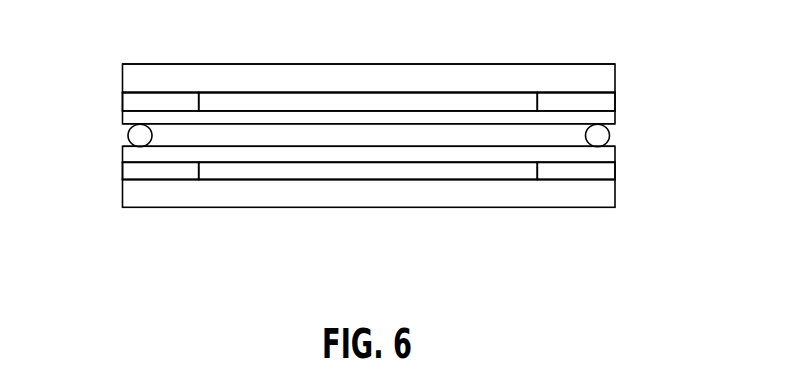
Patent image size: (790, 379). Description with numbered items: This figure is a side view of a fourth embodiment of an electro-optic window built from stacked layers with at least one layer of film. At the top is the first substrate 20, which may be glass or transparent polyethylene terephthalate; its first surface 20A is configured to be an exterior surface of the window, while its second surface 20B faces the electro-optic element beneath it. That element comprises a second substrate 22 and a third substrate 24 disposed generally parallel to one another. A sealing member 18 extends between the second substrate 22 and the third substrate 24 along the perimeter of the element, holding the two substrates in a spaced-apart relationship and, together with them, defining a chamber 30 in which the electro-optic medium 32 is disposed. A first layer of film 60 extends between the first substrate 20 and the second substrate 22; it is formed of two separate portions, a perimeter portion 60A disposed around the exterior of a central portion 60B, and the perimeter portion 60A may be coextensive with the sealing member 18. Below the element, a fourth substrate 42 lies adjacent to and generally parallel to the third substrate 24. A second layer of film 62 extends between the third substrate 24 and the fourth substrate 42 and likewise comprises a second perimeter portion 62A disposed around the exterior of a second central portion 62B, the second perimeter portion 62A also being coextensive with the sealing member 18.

The sealing member 18 is at (137, 137).
The first substrate 20 is at (360, 78).
The first surface 20A is at (404, 64).
The second surface 20B is at (462, 93).
The second substrate 22 is at (312, 117).
The third substrate 24 is at (435, 155).
The chamber 30 is at (321, 136).
The electro-optic medium 32 is at (364, 136).
The fourth substrate 42 is at (512, 190).
The first layer of film 60 is at (251, 102).
The perimeter portion 60A is at (132, 100).
The central portion 60B is at (222, 102).
The second layer of film 62 is at (251, 172).
The second perimeter portion 62A is at (132, 174).
The second central portion 62B is at (221, 172).